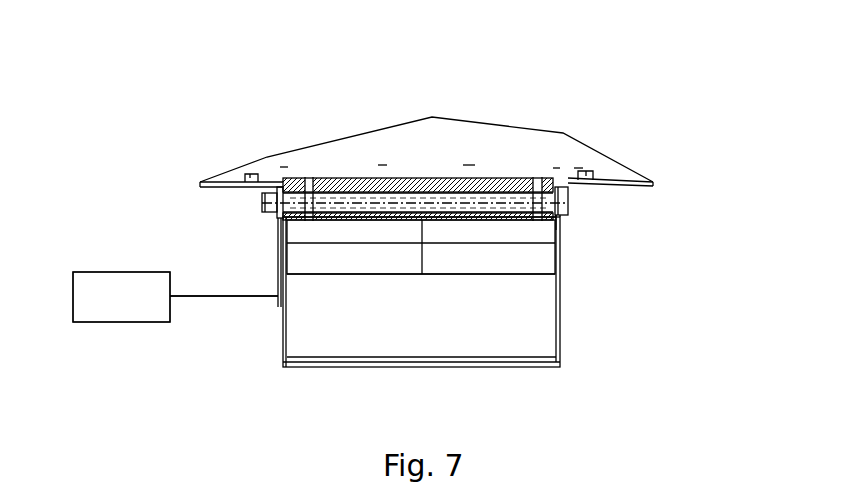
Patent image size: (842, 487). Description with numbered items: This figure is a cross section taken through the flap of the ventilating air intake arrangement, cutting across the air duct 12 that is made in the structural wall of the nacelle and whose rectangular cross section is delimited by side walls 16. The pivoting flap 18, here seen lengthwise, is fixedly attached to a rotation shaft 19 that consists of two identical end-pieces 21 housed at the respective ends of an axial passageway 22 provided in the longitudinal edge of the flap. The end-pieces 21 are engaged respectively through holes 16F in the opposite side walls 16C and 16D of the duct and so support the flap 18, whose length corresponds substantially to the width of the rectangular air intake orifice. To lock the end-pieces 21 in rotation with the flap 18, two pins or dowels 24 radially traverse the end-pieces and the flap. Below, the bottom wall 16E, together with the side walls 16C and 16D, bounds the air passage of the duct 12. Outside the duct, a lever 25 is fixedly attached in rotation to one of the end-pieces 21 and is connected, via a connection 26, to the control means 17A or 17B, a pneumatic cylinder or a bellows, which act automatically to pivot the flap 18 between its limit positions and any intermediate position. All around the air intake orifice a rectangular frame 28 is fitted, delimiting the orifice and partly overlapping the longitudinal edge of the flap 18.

The air duct 12 is at (457, 268).
The side walls 16 is at (480, 283).
The side wall 16C is at (282, 241).
The side wall 16D is at (560, 233).
The bottom wall 16E is at (513, 277).
The holes 16F is at (245, 173).
The control means 17A is at (160, 308).
The control means 17B is at (121, 297).
The pivoting flap 18 is at (442, 177).
The rotation shaft 19 is at (575, 221).
The end-pieces 21 is at (262, 203).
The axial passageway 22 is at (366, 177).
The pins or dowels 24 is at (282, 176).
The lever 25 is at (279, 280).
The connection 26 is at (217, 297).
The rectangular frame 28 is at (582, 154).